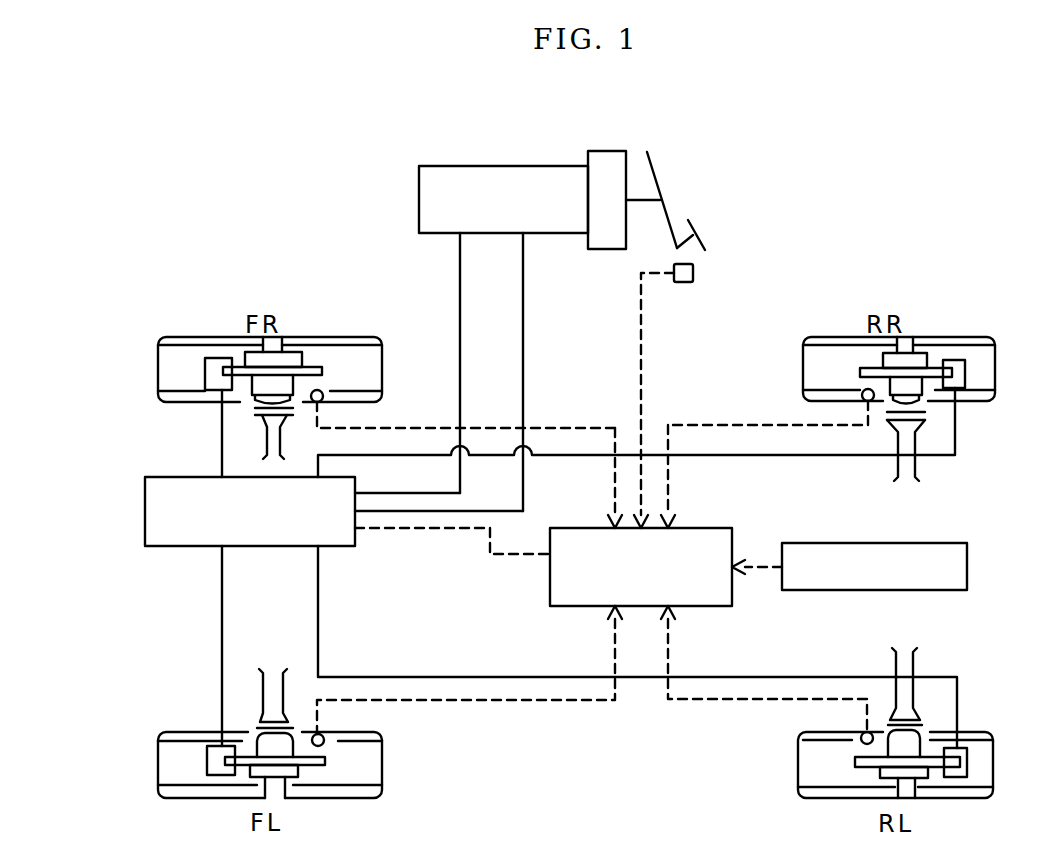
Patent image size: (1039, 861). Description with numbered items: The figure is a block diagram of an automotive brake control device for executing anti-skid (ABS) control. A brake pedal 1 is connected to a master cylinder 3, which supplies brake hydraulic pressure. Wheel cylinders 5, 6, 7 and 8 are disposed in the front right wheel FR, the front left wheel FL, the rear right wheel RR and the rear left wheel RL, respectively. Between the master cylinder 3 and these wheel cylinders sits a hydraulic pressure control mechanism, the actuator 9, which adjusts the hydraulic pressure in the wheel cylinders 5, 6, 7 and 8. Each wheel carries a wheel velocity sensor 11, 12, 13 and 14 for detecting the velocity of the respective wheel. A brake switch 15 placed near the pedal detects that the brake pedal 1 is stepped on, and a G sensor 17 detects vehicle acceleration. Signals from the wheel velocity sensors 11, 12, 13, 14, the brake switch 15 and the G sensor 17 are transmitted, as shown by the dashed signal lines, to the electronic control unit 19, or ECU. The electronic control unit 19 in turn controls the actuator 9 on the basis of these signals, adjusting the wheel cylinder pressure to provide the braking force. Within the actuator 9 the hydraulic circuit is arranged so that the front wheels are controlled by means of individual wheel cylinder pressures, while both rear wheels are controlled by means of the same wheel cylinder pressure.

The brake pedal 1 is at (690, 228).
The master cylinder 3 is at (502, 166).
The wheel cylinder 5 is at (213, 367).
The wheel cylinder 6 is at (210, 760).
The wheel cylinder 7 is at (957, 367).
The wheel cylinder 8 is at (967, 767).
The actuator 9 is at (155, 477).
The wheel velocity sensor 11 is at (322, 387).
The wheel velocity sensor 12 is at (327, 744).
The wheel velocity sensor 13 is at (863, 390).
The wheel velocity sensor 14 is at (862, 743).
The brake switch 15 is at (690, 282).
The G sensor 17 is at (907, 543).
The electronic control unit 19 is at (717, 528).